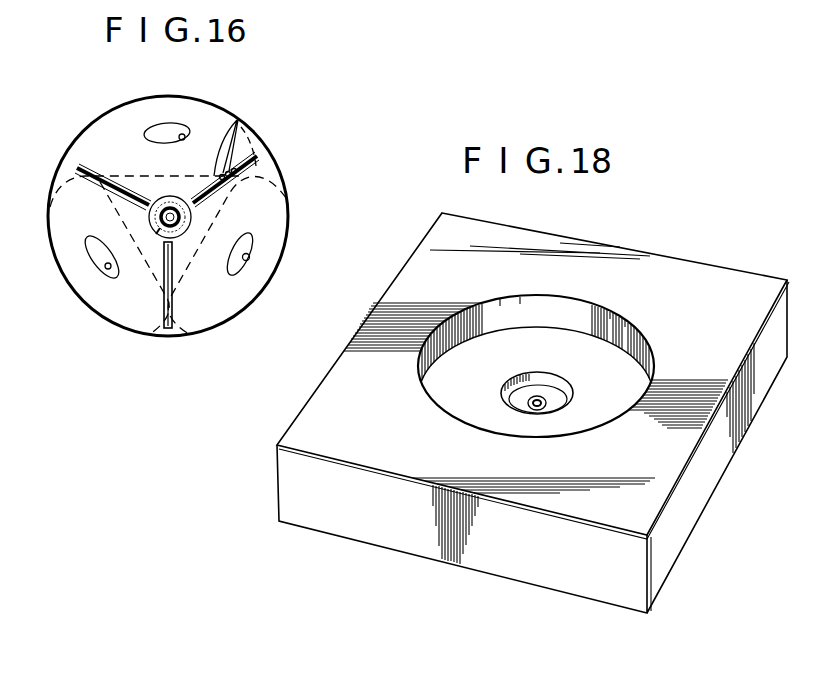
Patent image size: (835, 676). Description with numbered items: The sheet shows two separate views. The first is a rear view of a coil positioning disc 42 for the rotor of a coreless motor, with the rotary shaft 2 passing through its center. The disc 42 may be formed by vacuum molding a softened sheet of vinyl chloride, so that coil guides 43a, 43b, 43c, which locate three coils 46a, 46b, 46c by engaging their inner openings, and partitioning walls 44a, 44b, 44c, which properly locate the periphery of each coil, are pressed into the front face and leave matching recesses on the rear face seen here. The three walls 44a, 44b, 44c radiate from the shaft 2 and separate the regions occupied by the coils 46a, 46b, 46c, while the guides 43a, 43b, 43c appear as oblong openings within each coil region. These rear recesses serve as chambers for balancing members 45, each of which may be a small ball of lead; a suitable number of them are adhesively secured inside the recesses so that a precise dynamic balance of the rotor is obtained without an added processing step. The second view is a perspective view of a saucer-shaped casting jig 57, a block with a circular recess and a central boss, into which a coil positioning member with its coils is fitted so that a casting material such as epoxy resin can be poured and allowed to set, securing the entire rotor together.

In FIG. 16, the rotary shaft 2 is at (155, 210).
In FIG. 16, the coil positioning disc 42 is at (283, 172).
In FIG. 16, the coil guide 43a is at (242, 278).
In FIG. 16, the coil guide 43b is at (108, 262).
In FIG. 16, the coil guide 43c is at (166, 132).
In FIG. 16, the partitioning wall 44a is at (259, 158).
In FIG. 16, the partitioning wall 44b is at (168, 330).
In FIG. 16, the partitioning wall 44c is at (84, 162).
In FIG. 16, the balancing member 45 is at (240, 124).
In FIG. 16, the coil 46a is at (248, 313).
In FIG. 16, the coil 46b is at (76, 272).
In FIG. 16, the coil 46c is at (137, 106).
In FIG. 18, the casting jig 57 is at (668, 270).